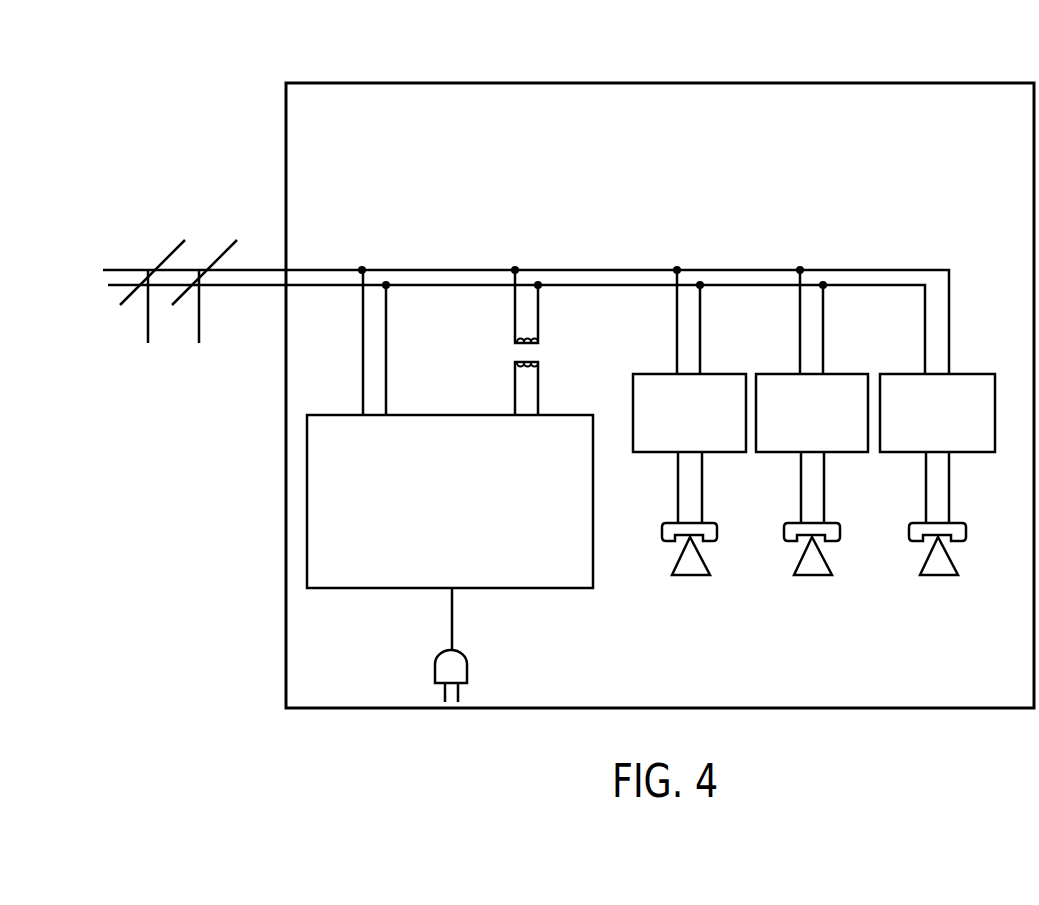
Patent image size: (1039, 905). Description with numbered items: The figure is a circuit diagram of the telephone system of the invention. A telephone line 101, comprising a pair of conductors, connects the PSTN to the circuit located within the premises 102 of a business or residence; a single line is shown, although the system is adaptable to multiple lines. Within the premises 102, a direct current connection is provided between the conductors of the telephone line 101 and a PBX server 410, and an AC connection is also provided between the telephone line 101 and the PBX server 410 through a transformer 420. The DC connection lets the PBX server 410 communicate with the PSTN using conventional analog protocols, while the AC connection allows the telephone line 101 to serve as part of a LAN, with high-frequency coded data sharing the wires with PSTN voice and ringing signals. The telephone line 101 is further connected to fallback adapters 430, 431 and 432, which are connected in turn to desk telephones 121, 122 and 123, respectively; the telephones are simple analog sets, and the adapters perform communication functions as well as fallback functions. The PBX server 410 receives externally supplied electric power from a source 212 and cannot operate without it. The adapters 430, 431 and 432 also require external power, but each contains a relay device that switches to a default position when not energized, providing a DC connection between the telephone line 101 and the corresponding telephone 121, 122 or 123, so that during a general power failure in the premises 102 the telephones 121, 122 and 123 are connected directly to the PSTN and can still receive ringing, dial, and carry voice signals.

The premises 102 is at (800, 82).
The telephone line 101 is at (263, 285).
The PBX server 410 is at (443, 413).
The transformer 420 is at (540, 341).
The source 212 is at (437, 664).
The fallback adapter 430 is at (660, 373).
The fallback adapter 431 is at (787, 373).
The fallback adapter 432 is at (908, 373).
The desk telephone 121 is at (690, 577).
The desk telephone 122 is at (812, 577).
The desk telephone 123 is at (938, 577).